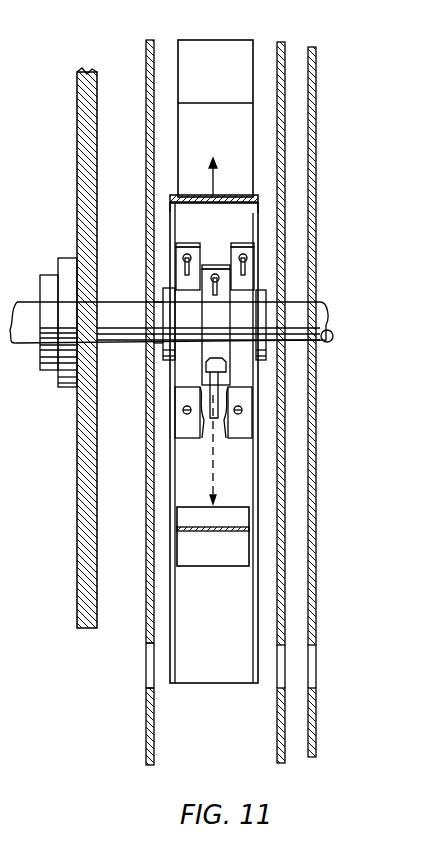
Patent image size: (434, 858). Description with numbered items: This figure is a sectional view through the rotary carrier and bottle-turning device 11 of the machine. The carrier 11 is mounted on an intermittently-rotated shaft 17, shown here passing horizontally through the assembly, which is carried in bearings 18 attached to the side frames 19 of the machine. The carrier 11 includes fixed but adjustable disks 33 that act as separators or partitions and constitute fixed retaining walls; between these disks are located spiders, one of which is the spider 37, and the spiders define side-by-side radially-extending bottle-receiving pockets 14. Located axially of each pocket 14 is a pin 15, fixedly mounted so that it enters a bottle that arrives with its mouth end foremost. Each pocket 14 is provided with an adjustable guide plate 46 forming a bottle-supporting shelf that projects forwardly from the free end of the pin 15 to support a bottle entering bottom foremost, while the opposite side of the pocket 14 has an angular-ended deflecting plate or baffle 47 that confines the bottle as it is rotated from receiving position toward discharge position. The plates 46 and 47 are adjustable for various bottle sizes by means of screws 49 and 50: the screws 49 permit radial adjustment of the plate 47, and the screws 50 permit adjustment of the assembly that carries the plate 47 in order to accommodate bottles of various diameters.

The rotary carrier 11 is at (260, 41).
The pocket 14 is at (268, 164).
The pin 15 is at (211, 170).
The shaft 17 is at (334, 334).
The bearing 18 is at (72, 378).
The side frame 19 is at (77, 226).
The disk 33 is at (147, 273).
The spider 37 is at (268, 210).
The guide plate 46 is at (228, 194).
The deflecting plate 47 is at (210, 47).
The screw 49 is at (248, 258).
The screw 50 is at (243, 410).